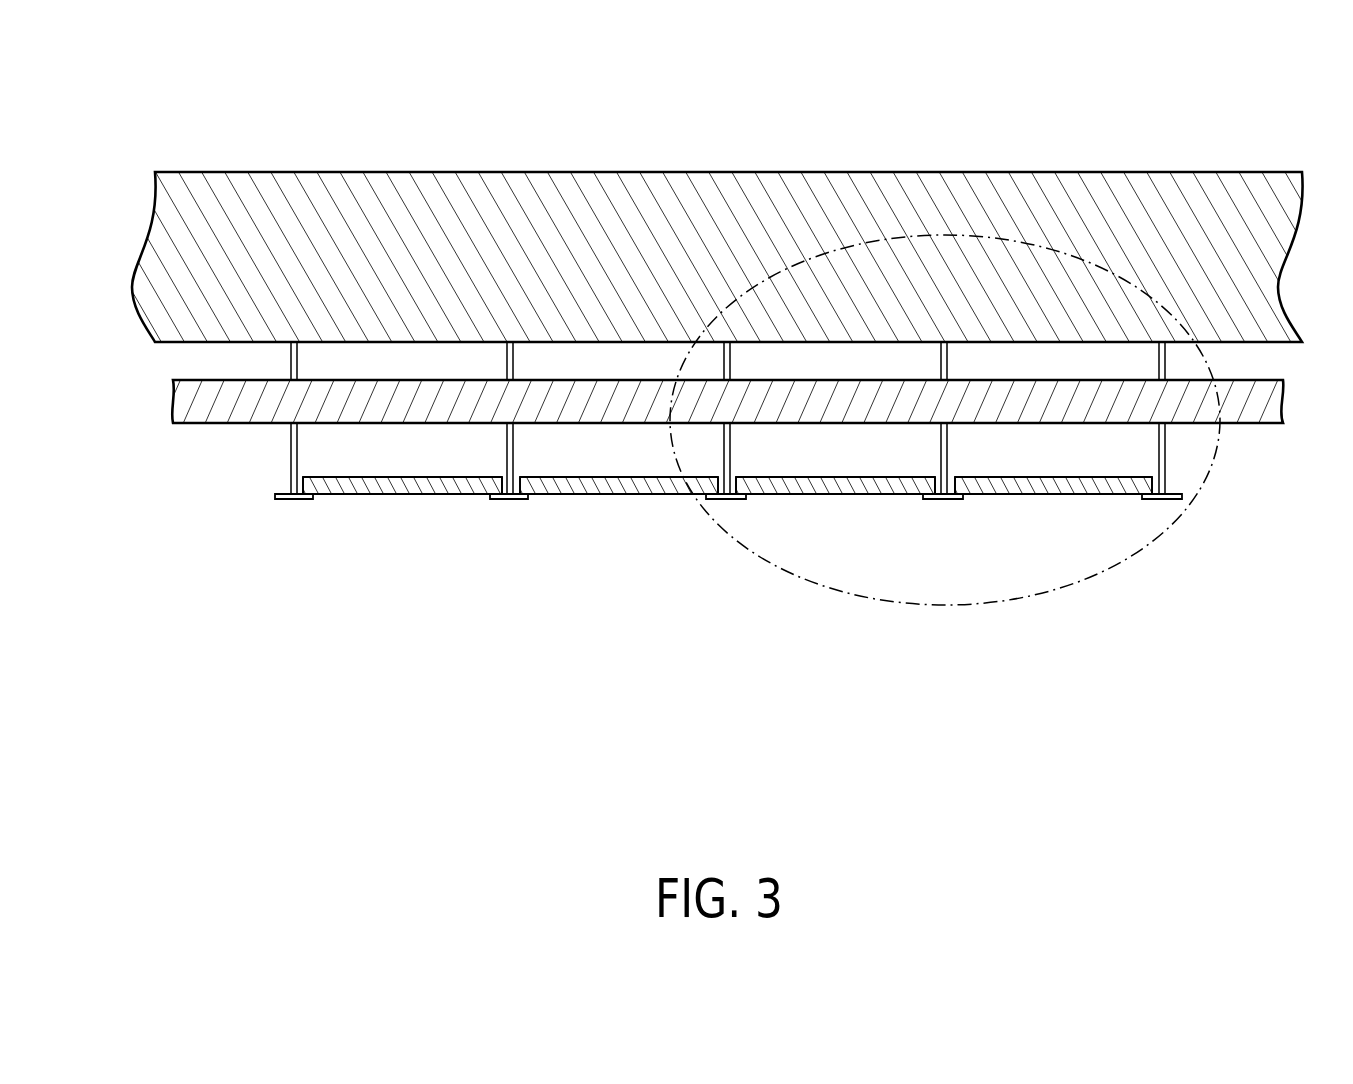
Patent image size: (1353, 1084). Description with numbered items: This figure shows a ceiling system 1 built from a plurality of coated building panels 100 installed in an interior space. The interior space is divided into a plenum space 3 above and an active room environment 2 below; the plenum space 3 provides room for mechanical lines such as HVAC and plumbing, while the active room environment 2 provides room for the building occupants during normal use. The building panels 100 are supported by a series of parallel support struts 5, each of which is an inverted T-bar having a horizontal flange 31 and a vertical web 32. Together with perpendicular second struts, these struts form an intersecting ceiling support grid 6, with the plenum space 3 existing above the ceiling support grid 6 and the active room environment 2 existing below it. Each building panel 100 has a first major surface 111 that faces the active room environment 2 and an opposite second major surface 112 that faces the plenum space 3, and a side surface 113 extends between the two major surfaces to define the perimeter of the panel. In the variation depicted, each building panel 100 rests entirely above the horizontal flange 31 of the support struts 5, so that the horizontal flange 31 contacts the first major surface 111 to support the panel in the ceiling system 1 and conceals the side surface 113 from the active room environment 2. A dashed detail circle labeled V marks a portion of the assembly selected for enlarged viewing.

The ceiling system 1 is at (128, 146).
The active room environment 2 is at (701, 499).
The plenum space 3 is at (130, 375).
The support strut 5 is at (757, 441).
The ceiling support grid 6 is at (625, 544).
The horizontal flange 31 is at (293, 499).
The vertical web 32 is at (288, 470).
The coated building panel 100 is at (431, 505).
The first major surface 111 is at (477, 496).
The second major surface 112 is at (400, 474).
The side surface 113 is at (519, 478).
The detail view circle V is at (1107, 570).